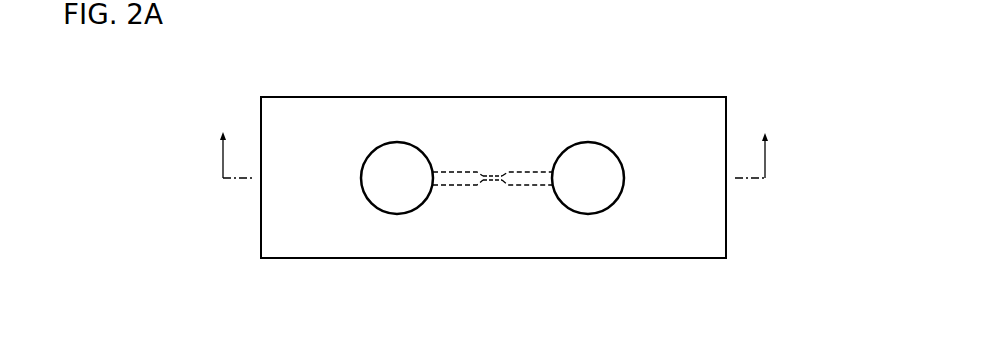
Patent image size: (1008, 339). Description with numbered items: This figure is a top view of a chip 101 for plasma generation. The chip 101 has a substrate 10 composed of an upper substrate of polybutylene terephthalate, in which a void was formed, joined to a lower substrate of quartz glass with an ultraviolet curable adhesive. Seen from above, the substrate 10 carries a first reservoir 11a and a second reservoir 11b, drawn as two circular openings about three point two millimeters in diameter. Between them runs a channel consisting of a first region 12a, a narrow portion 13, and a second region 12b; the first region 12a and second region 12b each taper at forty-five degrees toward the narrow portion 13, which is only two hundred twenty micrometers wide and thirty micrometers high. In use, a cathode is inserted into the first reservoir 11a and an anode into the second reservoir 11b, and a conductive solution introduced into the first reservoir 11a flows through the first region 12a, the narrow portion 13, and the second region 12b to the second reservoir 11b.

The chip for plasma generation 101 is at (667, 57).
The substrate 10 is at (710, 225).
The first reservoir 11a is at (398, 158).
The second reservoir 11b is at (590, 158).
The first region 12a is at (453, 183).
The second region 12b is at (533, 183).
The narrow portion 13 is at (492, 183).